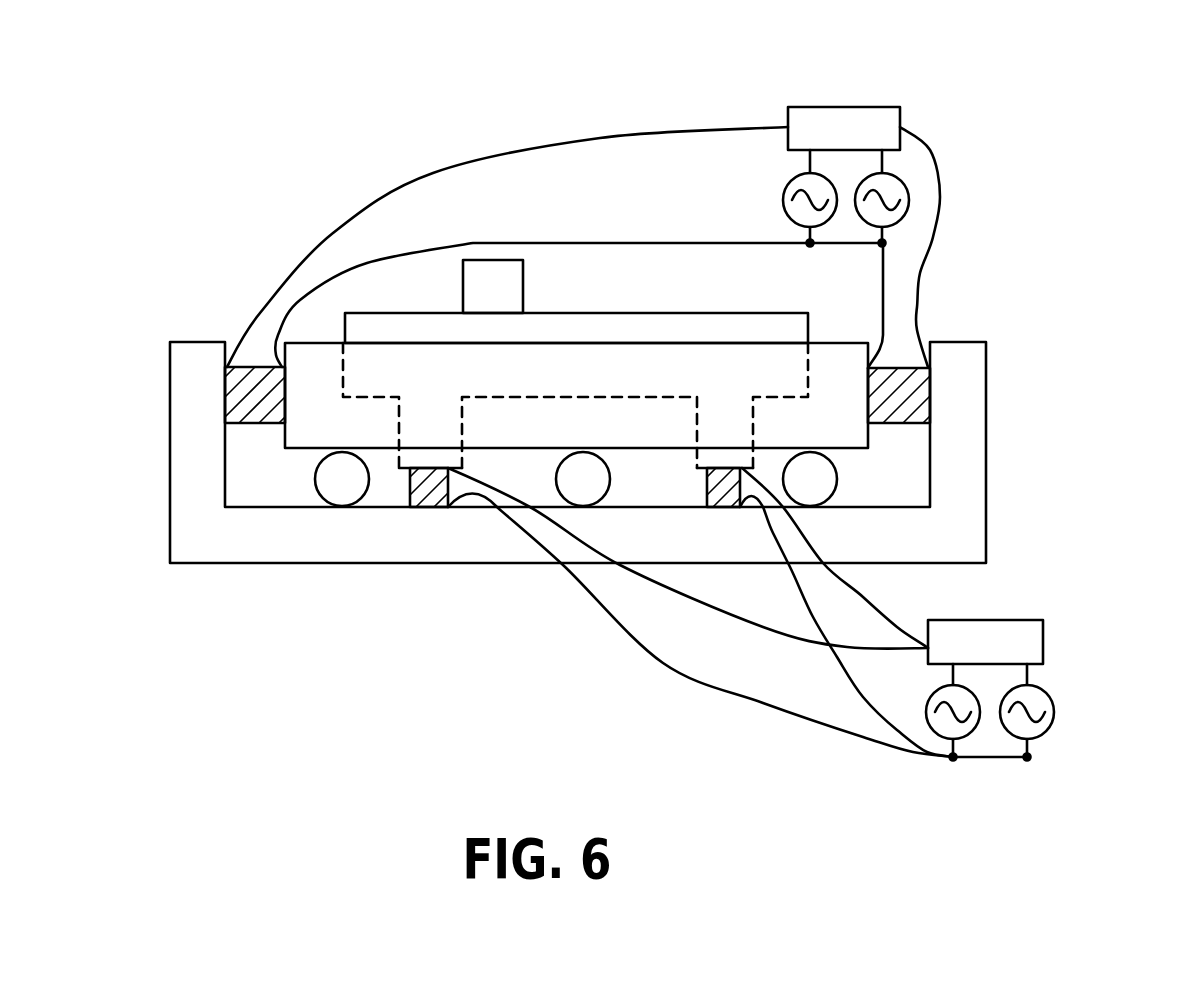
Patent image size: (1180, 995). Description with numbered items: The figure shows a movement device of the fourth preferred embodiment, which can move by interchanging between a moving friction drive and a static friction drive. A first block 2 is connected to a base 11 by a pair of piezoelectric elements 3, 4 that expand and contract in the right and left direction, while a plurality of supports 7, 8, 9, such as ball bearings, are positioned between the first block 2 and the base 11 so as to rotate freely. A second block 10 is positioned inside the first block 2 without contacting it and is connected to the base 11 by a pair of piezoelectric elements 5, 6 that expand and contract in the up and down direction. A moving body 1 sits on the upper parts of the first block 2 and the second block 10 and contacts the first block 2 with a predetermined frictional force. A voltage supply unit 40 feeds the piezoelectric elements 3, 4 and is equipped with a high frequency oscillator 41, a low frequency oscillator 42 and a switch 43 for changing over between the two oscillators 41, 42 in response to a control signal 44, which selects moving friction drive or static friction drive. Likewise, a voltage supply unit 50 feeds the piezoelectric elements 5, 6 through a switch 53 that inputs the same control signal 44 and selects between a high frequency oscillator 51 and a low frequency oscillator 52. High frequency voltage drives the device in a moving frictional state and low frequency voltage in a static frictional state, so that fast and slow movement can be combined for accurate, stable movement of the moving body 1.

The moving body 1 is at (512, 289).
The first block 2 is at (836, 347).
The piezoelectric element 3 is at (237, 412).
The piezoelectric element 4 is at (876, 414).
The piezoelectric element 5 is at (410, 488).
The piezoelectric element 6 is at (707, 487).
The support 7 is at (323, 490).
The support 8 is at (590, 493).
The support 9 is at (810, 493).
The second block 10 is at (705, 330).
The base 11 is at (981, 473).
The voltage supply unit 40 is at (607, 207).
The high frequency oscillator 41 is at (783, 205).
The low frequency oscillator 42 is at (902, 220).
The switch 43 is at (848, 118).
The control signal 44 is at (822, 97).
The voltage supply unit 50 is at (794, 659).
The high frequency oscillator 51 is at (925, 712).
The low frequency oscillator 52 is at (1045, 733).
The switch 53 is at (1020, 632).